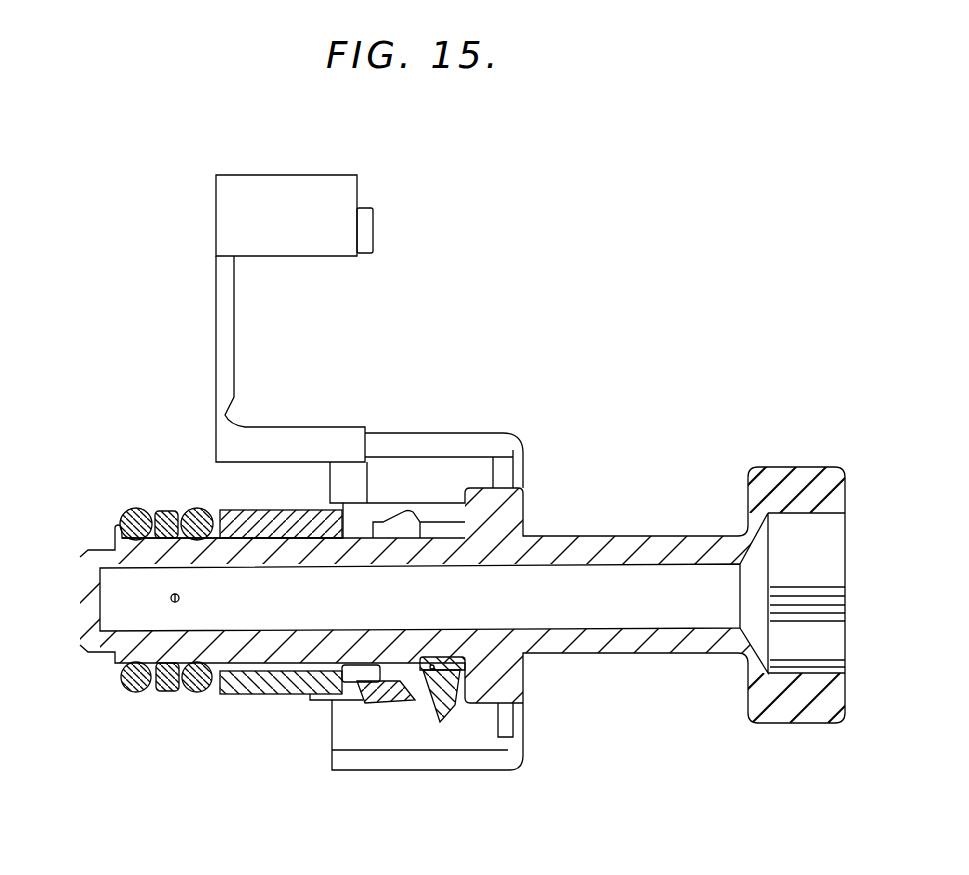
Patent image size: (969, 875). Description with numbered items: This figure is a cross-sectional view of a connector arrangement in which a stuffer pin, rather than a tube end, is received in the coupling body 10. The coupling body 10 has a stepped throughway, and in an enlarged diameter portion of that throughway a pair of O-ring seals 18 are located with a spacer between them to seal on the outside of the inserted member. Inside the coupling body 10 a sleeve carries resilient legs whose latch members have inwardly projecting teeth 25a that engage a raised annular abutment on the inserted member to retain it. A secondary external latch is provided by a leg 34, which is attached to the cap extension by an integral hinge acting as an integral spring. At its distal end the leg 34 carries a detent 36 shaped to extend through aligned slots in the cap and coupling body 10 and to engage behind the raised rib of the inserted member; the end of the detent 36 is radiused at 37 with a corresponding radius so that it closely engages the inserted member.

The coupling body 10 is at (449, 623).
The O-ring seals 18 is at (187, 690).
The inwardly projecting teeth 25a is at (442, 722).
The leg 34 is at (323, 339).
The detent 36 is at (322, 207).
The radiused end 37 is at (369, 240).